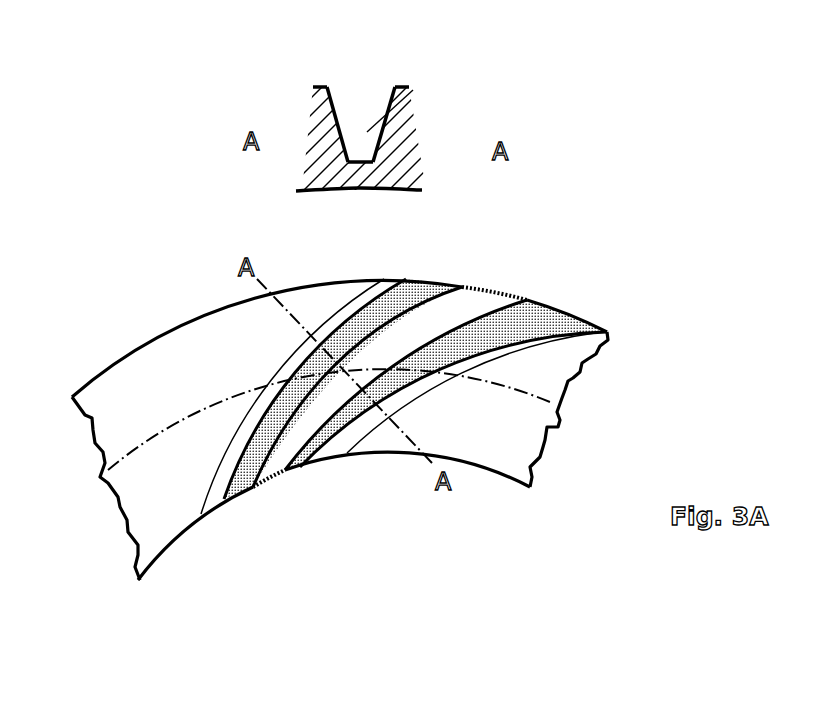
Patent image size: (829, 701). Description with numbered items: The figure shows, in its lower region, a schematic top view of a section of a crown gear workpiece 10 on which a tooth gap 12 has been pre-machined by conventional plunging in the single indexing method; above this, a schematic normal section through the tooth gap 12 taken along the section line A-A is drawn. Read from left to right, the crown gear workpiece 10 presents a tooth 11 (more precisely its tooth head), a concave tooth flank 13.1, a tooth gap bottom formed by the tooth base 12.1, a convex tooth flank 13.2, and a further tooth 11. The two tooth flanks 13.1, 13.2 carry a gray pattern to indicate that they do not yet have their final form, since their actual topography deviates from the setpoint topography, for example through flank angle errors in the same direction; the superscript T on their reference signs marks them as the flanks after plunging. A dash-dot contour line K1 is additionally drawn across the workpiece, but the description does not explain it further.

The crown gear workpiece 10 is at (98, 260).
The tooth 11 is at (210, 498).
The tooth gap 12 is at (408, 110).
The tooth base 12.1 is at (361, 164).
The concave tooth flank 13.1 is at (419, 292).
The convex tooth flank 13.2 is at (385, 102).
The curve / contour line K1 is at (557, 396).